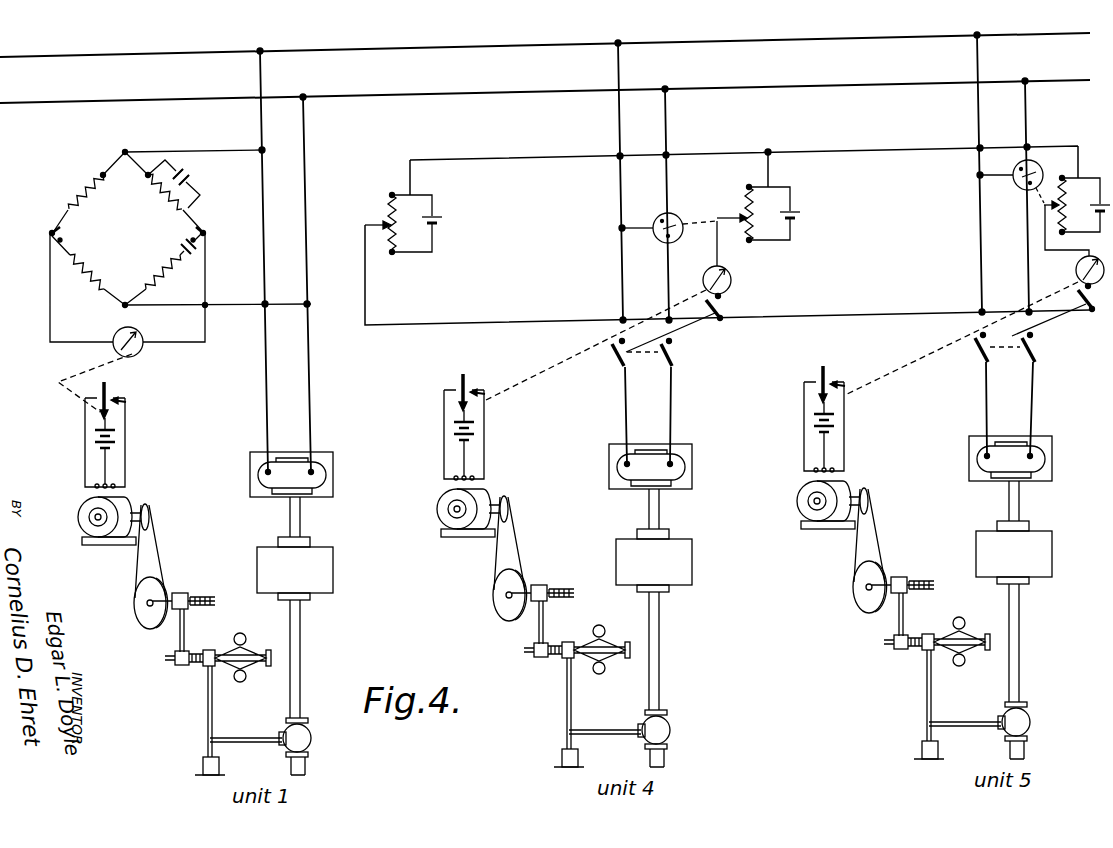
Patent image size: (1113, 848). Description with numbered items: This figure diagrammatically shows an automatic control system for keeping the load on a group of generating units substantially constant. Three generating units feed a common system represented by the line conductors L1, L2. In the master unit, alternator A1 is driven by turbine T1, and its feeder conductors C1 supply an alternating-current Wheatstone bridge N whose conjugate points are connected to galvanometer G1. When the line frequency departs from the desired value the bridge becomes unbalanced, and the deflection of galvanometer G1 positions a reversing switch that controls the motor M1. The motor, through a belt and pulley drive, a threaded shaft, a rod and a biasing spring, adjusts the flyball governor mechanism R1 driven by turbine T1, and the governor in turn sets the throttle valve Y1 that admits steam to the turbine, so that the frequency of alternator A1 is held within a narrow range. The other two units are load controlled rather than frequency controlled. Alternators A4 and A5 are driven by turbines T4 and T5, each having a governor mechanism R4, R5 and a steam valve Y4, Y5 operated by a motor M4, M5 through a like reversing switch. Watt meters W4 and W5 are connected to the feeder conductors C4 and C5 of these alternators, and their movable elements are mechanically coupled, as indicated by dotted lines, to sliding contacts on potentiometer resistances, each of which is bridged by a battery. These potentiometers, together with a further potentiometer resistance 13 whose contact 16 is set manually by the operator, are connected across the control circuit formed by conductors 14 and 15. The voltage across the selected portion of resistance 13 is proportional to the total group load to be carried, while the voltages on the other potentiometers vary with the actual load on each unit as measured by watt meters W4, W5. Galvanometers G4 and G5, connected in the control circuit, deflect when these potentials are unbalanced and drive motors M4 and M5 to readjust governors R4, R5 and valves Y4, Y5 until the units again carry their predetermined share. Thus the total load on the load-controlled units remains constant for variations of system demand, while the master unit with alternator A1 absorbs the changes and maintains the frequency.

The potentiometer resistance 13 is at (405, 246).
The control circuit conductor 14 is at (524, 152).
The control circuit conductor 15 is at (547, 321).
The slidable contact 16 is at (364, 222).
The alternating current Wheatstone bridge N is at (110, 210).
The galvanometer G1 is at (143, 340).
The feeder conductors C1 is at (303, 128).
The alternator A1 is at (326, 470).
The motor M1 is at (118, 506).
The turbine T1 is at (320, 573).
The valve Y1 is at (312, 738).
The governor mechanism R1 is at (256, 635).
The line conductor L1 is at (545, 42).
The line conductor L2 is at (545, 88).
The feeder conductors C4 is at (664, 122).
The watt meter W4 is at (677, 216).
The galvanometer G4 is at (732, 285).
The alternator A4 is at (664, 463).
The motor M4 is at (487, 503).
The turbine T4 is at (667, 599).
The valve Y4 is at (628, 712).
The governor mechanism R4 is at (596, 641).
The feeder conductors C5 is at (1025, 114).
The watt meter W5 is at (1036, 164).
The galvanometer G5 is at (1079, 250).
The alternator A5 is at (1024, 455).
The motor M5 is at (847, 495).
The turbine T5 is at (1027, 591).
The valve Y5 is at (988, 704).
The governor mechanism R5 is at (956, 633).